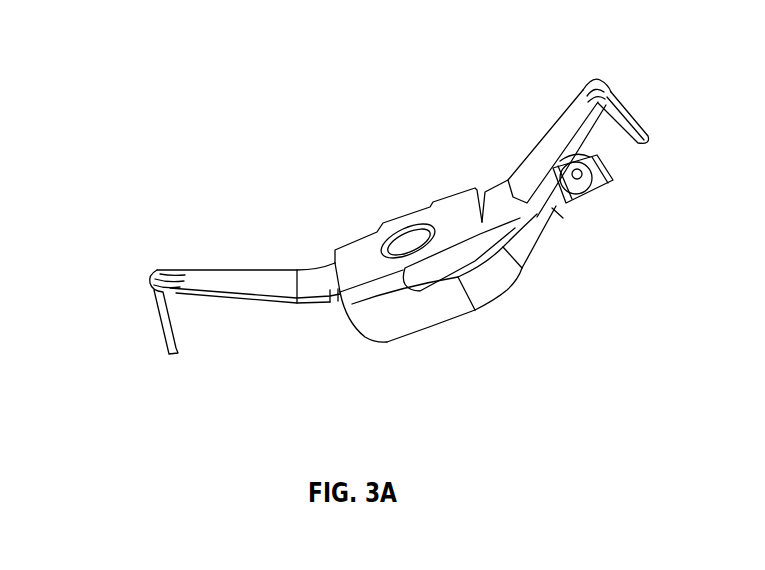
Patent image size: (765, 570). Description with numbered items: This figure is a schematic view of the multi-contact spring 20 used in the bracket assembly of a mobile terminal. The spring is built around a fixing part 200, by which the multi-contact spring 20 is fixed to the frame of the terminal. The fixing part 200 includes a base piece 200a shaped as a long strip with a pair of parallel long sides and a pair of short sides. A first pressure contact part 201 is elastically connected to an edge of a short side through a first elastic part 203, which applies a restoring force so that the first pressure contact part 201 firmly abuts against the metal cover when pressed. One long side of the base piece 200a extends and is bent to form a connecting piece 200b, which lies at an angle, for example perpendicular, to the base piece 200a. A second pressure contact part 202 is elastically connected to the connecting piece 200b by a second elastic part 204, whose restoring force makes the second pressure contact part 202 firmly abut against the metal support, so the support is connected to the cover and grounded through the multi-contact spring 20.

The multi-contact spring 20 is at (381, 128).
The fixing part 200 is at (225, 367).
The base piece 200a is at (357, 277).
The connecting piece 200b is at (397, 328).
The first pressure contact part 201 is at (202, 280).
The second pressure contact part 202 is at (556, 206).
The first elastic part 203 is at (317, 278).
The second elastic part 204 is at (497, 284).